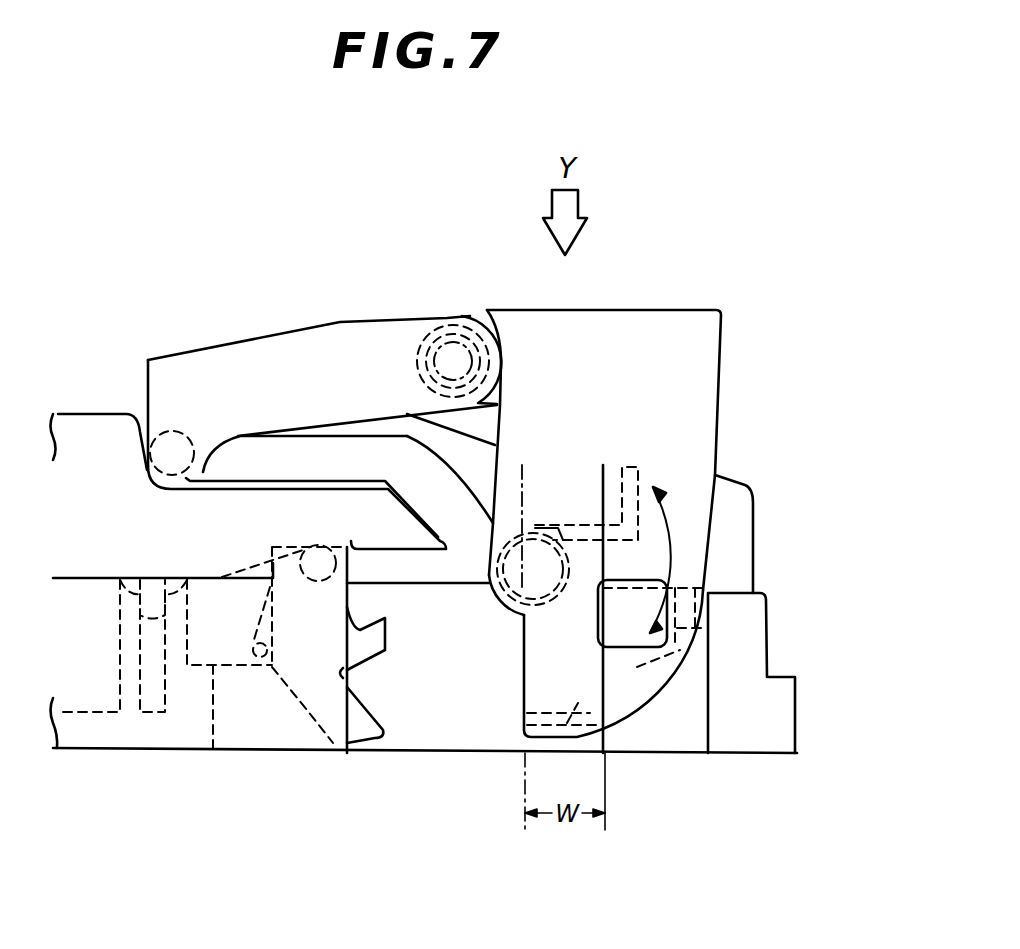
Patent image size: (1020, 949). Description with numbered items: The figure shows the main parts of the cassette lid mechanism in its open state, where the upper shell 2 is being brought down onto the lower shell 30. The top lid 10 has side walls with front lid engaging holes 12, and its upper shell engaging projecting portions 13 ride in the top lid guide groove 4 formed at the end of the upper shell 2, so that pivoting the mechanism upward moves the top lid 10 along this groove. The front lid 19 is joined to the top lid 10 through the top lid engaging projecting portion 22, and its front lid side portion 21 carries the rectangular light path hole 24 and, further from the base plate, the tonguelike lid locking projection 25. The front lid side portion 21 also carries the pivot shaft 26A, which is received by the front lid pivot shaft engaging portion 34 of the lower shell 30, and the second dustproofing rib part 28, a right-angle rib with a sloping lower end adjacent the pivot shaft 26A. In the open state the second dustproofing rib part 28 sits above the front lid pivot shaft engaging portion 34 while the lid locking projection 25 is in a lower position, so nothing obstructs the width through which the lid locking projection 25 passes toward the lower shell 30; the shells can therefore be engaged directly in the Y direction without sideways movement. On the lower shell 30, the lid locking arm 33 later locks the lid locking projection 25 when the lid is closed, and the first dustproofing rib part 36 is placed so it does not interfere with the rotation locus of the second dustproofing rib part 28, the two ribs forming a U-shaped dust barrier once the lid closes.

The upper shell 2 is at (88, 428).
The top lid guide groove 4 is at (251, 465).
The top lid 10 is at (352, 318).
The front lid engaging hole 12 is at (466, 330).
The upper shell engaging projecting portion 13 is at (148, 470).
The front lid 19 is at (597, 308).
The front lid side portion 21 is at (680, 318).
The top lid engaging projecting portion 22 is at (421, 326).
The light path hole 24 is at (618, 634).
The lid locking projection 25 is at (568, 714).
The pivot shaft 26A is at (533, 550).
The second dustproofing rib part 28 is at (637, 480).
The lower shell 30 is at (263, 730).
The lid locking arm 33 is at (318, 665).
The front lid pivot shaft engaging portion 34 is at (500, 603).
The first dustproofing rib part 36 is at (713, 627).